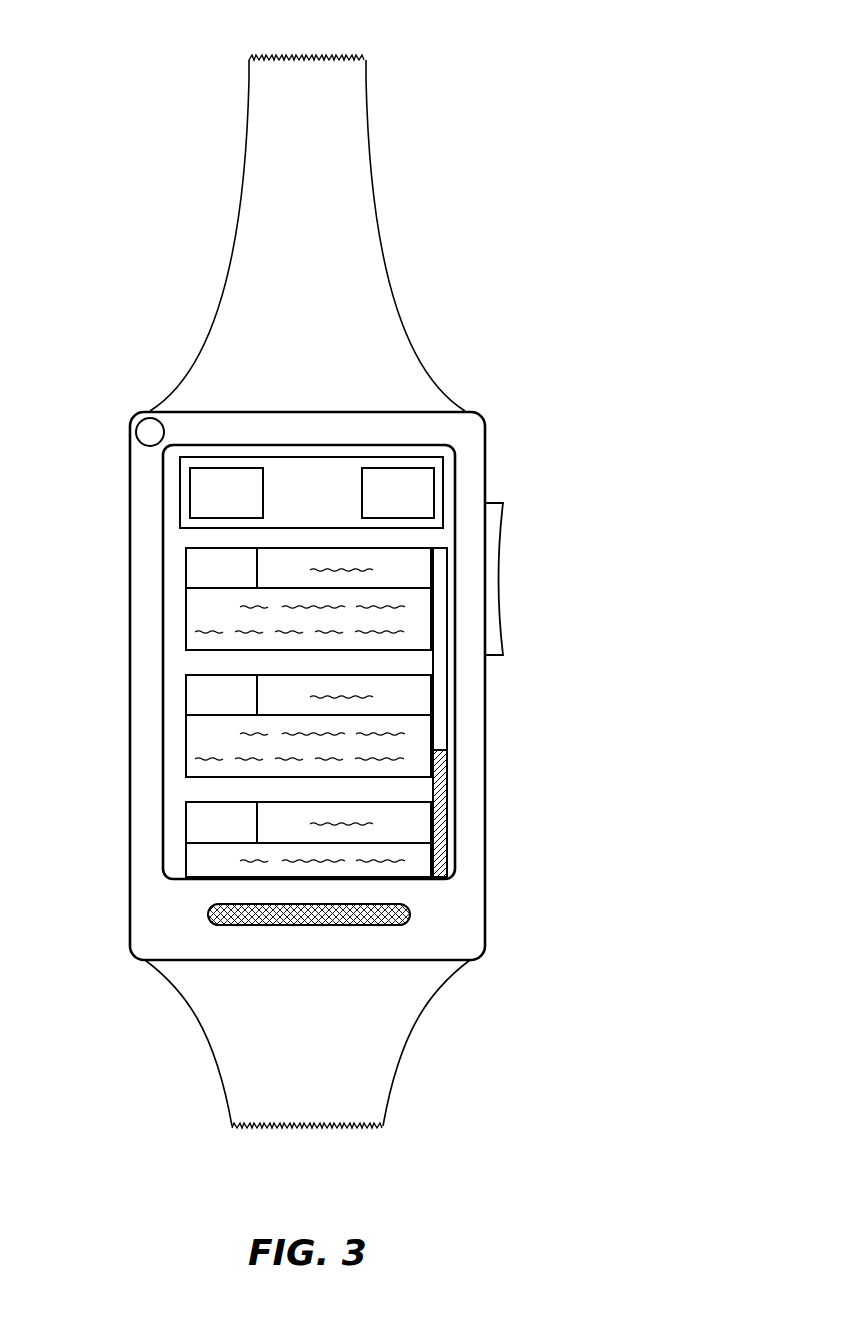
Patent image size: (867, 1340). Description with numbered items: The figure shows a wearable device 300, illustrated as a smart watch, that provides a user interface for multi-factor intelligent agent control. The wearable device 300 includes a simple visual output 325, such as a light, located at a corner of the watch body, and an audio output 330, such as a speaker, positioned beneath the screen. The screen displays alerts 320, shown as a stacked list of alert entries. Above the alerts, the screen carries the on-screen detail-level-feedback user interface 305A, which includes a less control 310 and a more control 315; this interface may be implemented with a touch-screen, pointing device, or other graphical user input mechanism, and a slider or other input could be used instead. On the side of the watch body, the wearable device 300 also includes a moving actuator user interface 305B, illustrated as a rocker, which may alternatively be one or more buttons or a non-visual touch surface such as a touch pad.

The wearable device 300 is at (648, 34).
The detail-level-feedback user interface 305A is at (190, 477).
The moving actuator user interface 305B is at (503, 503).
The less control 310 is at (192, 517).
The more control 315 is at (436, 463).
The alerts 320 is at (186, 620).
The simple visual output 325 is at (138, 416).
The audio output 330 is at (210, 906).